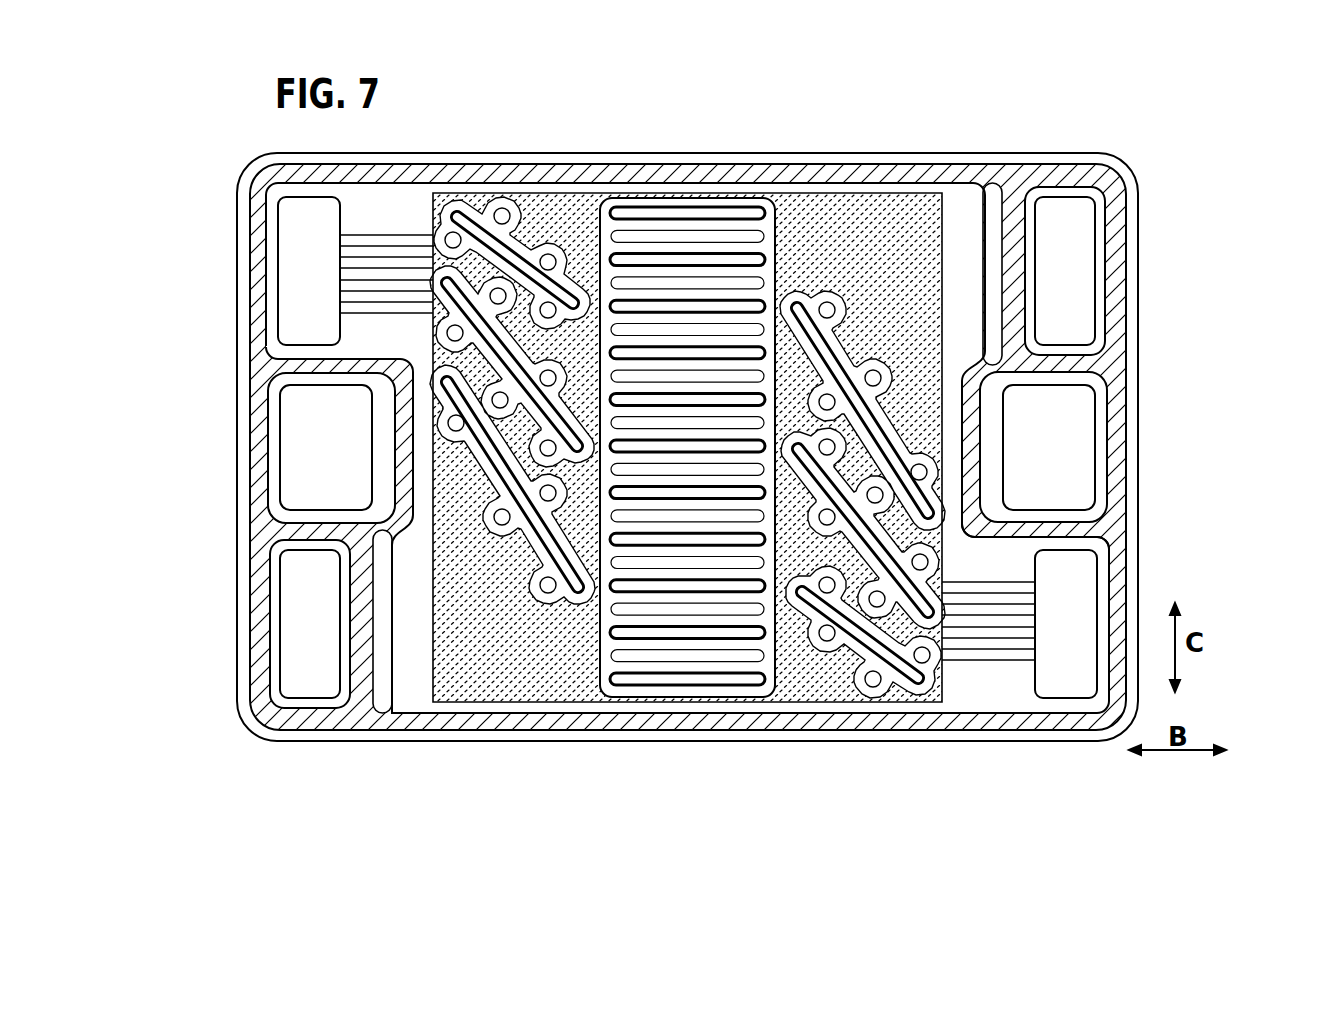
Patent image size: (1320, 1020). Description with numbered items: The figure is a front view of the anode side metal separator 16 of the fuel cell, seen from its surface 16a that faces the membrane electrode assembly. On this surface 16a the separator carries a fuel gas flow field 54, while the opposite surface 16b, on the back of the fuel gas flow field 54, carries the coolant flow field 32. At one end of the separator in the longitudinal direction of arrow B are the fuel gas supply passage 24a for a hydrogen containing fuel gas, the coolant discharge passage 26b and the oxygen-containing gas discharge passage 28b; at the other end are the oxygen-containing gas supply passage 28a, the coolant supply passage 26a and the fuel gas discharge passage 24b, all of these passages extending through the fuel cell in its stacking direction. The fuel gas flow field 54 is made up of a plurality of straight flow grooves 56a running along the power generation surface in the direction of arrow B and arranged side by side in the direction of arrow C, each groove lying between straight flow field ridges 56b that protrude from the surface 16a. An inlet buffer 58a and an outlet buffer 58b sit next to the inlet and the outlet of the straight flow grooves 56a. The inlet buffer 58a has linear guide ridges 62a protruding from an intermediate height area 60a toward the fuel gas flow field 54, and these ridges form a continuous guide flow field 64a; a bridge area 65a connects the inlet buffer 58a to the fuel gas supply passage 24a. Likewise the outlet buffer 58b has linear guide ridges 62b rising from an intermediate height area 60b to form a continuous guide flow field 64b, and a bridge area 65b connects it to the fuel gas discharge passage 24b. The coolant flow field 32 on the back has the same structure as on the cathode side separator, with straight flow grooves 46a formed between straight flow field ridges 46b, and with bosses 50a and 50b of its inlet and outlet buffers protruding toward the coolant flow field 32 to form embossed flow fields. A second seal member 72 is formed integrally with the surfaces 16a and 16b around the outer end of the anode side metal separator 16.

The anode side metal separator 16 is at (687, 441).
The surface 16a is at (1005, 736).
The surface 16b is at (1050, 745).
The fuel gas supply passage 24a is at (309, 271).
The fuel gas discharge passage 24b is at (1066, 624).
The coolant supply passage 26a is at (1043, 442).
The coolant discharge passage 26b is at (313, 463).
The oxygen-containing gas supply passage 28a is at (1065, 271).
The oxygen-containing gas discharge passage 28b is at (310, 624).
The coolant flow field 32 is at (682, 208).
The straight flow grooves 46a is at (640, 683).
The straight flow field ridges 46b is at (645, 237).
The bosses 50a is at (453, 238).
The bosses 50b is at (936, 689).
The fuel gas flow field 54 is at (705, 464).
The straight flow grooves 56a is at (687, 469).
The straight flow field ridges 56b is at (687, 511).
The inlet buffer 58a is at (465, 667).
The outlet buffer 58b is at (912, 228).
The intermediate height area 60a is at (478, 660).
The intermediate height area 60b is at (900, 235).
The linear guide ridges 62a is at (387, 361).
The linear guide ridges 62b is at (992, 538).
The continuous guide flow field 64a is at (513, 316).
The continuous guide flow field 64b is at (880, 580).
The bridge area 65a is at (388, 294).
The bridge area 65b is at (1001, 601).
The second seal member 72 is at (1081, 173).